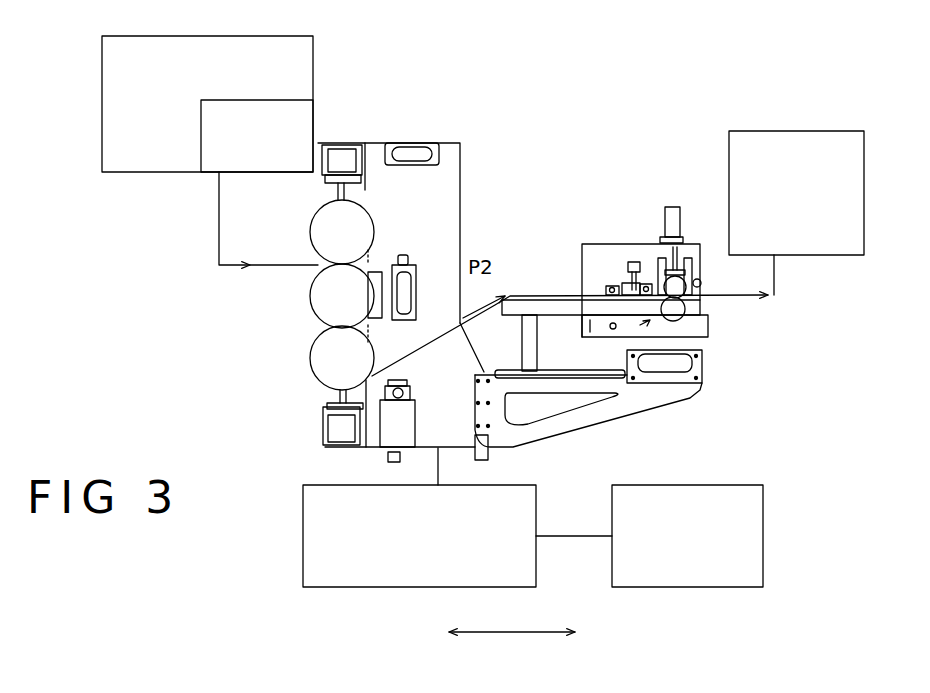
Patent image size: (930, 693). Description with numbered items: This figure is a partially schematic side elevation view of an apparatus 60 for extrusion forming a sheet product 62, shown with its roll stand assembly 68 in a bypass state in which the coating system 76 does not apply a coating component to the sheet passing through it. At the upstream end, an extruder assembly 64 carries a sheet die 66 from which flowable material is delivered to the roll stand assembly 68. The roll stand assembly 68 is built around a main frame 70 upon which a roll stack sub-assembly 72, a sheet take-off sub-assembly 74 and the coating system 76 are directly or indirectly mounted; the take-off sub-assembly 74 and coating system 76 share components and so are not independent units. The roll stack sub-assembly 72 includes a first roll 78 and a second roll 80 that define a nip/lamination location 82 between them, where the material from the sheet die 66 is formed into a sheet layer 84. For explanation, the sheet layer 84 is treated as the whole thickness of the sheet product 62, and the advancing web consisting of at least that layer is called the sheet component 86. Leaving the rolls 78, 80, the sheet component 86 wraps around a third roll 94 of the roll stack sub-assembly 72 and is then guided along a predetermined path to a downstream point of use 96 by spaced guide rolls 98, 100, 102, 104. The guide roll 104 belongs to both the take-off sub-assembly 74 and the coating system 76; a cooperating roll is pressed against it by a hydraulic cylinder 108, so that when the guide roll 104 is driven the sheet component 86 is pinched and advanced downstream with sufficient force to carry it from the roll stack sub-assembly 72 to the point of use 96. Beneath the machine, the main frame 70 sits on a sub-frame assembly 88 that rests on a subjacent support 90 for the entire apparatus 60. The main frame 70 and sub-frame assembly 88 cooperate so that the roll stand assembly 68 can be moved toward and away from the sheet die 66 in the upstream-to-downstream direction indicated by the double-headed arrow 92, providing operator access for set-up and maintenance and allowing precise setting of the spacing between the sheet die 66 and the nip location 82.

The apparatus 60 is at (562, 138).
The sheet product 62 is at (737, 300).
The extruder assembly 64 is at (156, 140).
The sheet die 66 is at (268, 169).
The roll stand assembly 68 is at (503, 150).
The main frame 70 is at (425, 230).
The roll stack sub-assembly 72 is at (391, 140).
The sheet take-off sub-assembly 74 is at (699, 266).
The coating system 76 is at (593, 377).
The first roll 78 is at (352, 245).
The second roll 80 is at (352, 309).
The nip/lamination location 82 is at (316, 259).
The sheet layer 84 is at (377, 272).
The sheet component 86 is at (567, 297).
The sub-frame assembly 88 is at (424, 581).
The support 90 is at (698, 555).
The double-headed arrow 92 is at (512, 657).
The third roll 94 is at (352, 371).
The point of use 96 is at (818, 246).
The guide roll 98 is at (437, 345).
The guide roll 100 is at (525, 296).
The guide roll 102 is at (590, 297).
The guide roll 104 is at (677, 312).
The hydraulic cylinder 108 is at (665, 215).